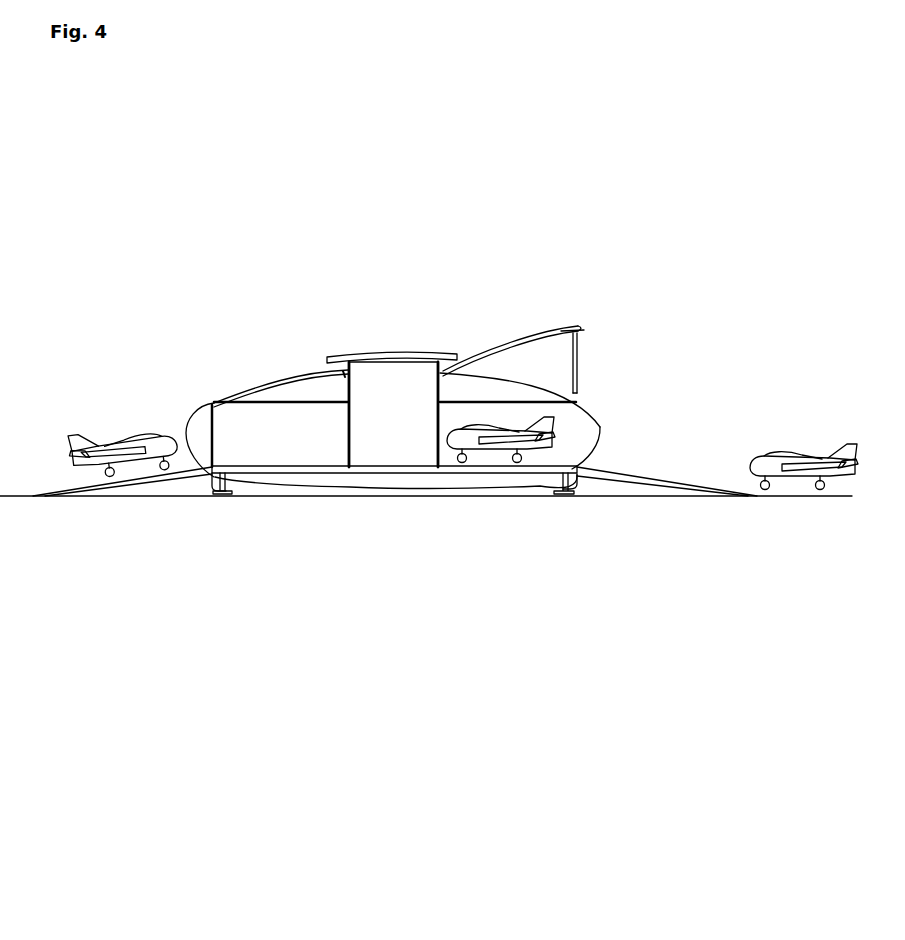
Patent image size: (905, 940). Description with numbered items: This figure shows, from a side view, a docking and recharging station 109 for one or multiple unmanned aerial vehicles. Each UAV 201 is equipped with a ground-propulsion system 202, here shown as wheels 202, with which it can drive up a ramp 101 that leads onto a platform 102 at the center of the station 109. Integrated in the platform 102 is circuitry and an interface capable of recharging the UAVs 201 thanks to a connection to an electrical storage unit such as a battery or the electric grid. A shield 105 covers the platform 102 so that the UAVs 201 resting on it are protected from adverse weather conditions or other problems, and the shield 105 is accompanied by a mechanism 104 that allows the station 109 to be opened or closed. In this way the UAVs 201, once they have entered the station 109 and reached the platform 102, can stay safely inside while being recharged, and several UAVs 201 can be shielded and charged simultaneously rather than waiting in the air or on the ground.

The ramp 101 is at (690, 497).
The platform 102 is at (335, 466).
The mechanism 104 is at (576, 373).
The shield 105 is at (273, 377).
The docking and recharging station 109 is at (378, 565).
The UAV 201 is at (76, 440).
The ground-propulsion system 202 is at (117, 470).